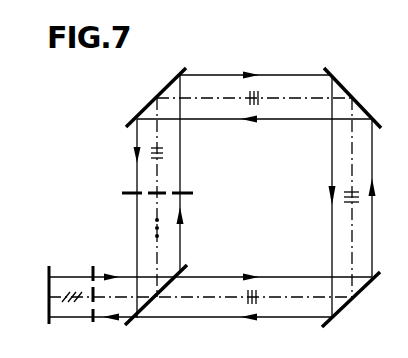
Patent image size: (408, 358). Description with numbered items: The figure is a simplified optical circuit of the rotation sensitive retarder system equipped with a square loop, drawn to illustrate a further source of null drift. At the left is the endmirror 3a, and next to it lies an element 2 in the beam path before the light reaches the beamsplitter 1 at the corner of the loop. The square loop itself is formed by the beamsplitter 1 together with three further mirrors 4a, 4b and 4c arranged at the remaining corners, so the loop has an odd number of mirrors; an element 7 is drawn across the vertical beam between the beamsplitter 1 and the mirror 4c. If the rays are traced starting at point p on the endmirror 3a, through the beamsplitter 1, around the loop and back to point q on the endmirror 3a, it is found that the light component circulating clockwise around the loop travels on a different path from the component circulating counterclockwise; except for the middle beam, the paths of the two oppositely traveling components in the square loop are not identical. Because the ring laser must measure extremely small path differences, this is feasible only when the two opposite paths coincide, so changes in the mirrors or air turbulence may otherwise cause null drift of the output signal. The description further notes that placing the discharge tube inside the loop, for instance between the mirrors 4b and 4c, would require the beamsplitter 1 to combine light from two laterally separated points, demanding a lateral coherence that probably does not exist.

The beamsplitter 1 is at (131, 323).
The quarter-wave plate 2 is at (102, 306).
The endmirror 3a is at (31, 295).
The mirror 4a is at (351, 300).
The mirror 4b is at (352, 98).
The mirror 4c is at (156, 97).
The polarization element 7 is at (165, 195).
The point p is at (50, 273).
The point q is at (52, 321).